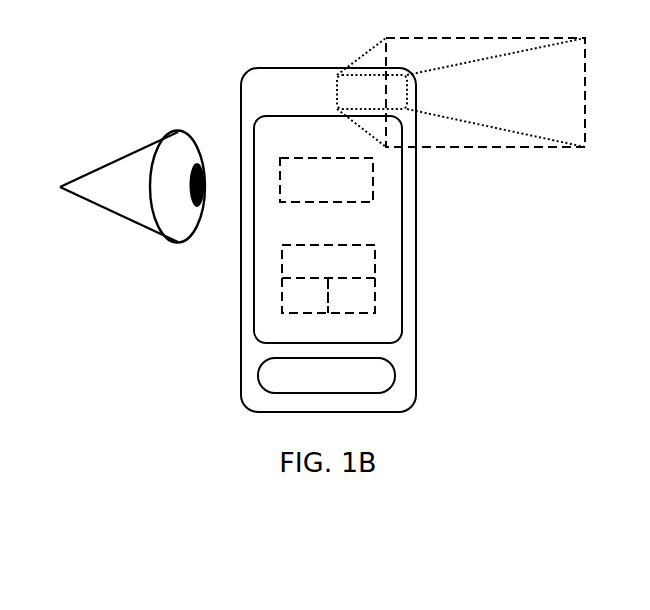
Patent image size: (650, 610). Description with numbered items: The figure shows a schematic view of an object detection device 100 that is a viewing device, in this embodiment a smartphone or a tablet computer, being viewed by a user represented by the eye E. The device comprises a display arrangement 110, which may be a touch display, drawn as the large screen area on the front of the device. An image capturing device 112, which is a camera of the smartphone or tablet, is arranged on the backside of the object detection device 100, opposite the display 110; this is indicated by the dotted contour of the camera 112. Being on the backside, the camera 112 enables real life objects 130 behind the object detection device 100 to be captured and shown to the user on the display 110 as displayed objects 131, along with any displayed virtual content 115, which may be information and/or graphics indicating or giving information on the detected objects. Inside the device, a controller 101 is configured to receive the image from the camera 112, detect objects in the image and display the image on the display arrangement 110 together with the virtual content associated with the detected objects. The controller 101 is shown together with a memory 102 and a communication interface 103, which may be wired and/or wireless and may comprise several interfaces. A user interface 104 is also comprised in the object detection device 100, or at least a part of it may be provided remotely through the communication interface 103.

The eye E is at (132, 175).
The object detection device 100 is at (328, 240).
The display arrangement 110 is at (328, 229).
The image capturing device 112 is at (372, 92).
The real life objects 130 is at (461, 92).
The displayed objects 131 is at (326, 180).
The displayed virtual content 115 is at (326, 180).
The controller 101 is at (328, 279).
The memory 102 is at (306, 295).
The communication interface 103 is at (349, 296).
The user interface 104 is at (326, 375).